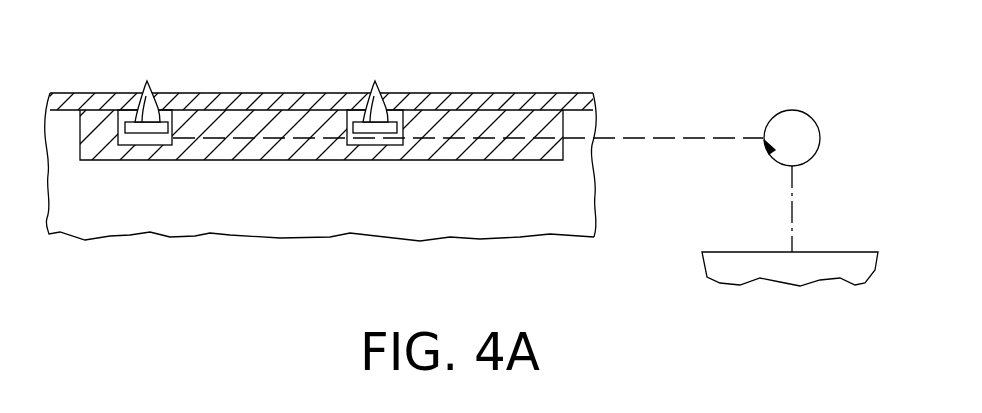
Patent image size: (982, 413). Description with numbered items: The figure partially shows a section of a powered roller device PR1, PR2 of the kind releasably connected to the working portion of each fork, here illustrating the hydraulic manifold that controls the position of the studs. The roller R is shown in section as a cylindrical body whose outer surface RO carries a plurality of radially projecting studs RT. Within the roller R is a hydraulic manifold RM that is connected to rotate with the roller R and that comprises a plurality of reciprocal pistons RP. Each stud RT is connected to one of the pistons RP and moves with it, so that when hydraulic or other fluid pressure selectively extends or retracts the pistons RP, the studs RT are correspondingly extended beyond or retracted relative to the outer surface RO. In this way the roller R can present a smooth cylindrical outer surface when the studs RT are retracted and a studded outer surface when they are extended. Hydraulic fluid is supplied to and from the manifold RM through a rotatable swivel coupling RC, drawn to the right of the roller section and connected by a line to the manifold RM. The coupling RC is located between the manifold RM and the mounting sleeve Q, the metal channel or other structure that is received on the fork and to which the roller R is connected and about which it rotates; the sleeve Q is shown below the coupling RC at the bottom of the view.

The roller R is at (399, 174).
The outer surface of the roller RO is at (440, 91).
The hydraulic manifold RM is at (470, 147).
The reciprocal pistons RP is at (140, 127).
The studs RT is at (147, 88).
The rotatable (swivel) coupling RC is at (798, 108).
The mounting sleeve Q is at (829, 251).
The powered roller device of the first fork PR1 is at (318, 208).
The powered roller device of the second fork PR2 is at (60, 236).